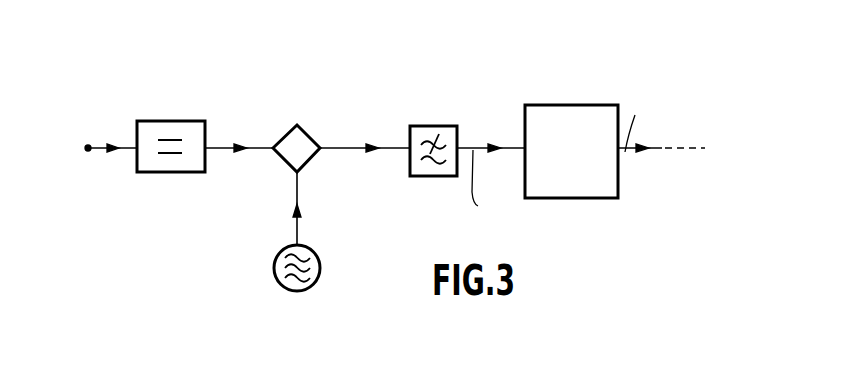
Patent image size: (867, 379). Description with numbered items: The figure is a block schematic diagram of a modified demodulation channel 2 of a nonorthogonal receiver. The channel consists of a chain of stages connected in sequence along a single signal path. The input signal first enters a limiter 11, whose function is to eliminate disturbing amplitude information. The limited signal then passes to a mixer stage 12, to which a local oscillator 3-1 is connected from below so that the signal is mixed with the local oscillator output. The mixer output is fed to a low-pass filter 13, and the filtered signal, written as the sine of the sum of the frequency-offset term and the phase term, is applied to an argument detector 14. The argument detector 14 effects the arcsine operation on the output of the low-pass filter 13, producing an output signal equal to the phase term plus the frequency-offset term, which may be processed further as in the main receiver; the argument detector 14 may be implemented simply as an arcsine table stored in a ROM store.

The demodulation channel 2 is at (350, 62).
The limiter 11 is at (162, 121).
The mixer stage 12 is at (289, 128).
The low-pass filter 13 is at (437, 126).
The argument detector 14 is at (548, 105).
The local oscillator 3-1 is at (316, 257).